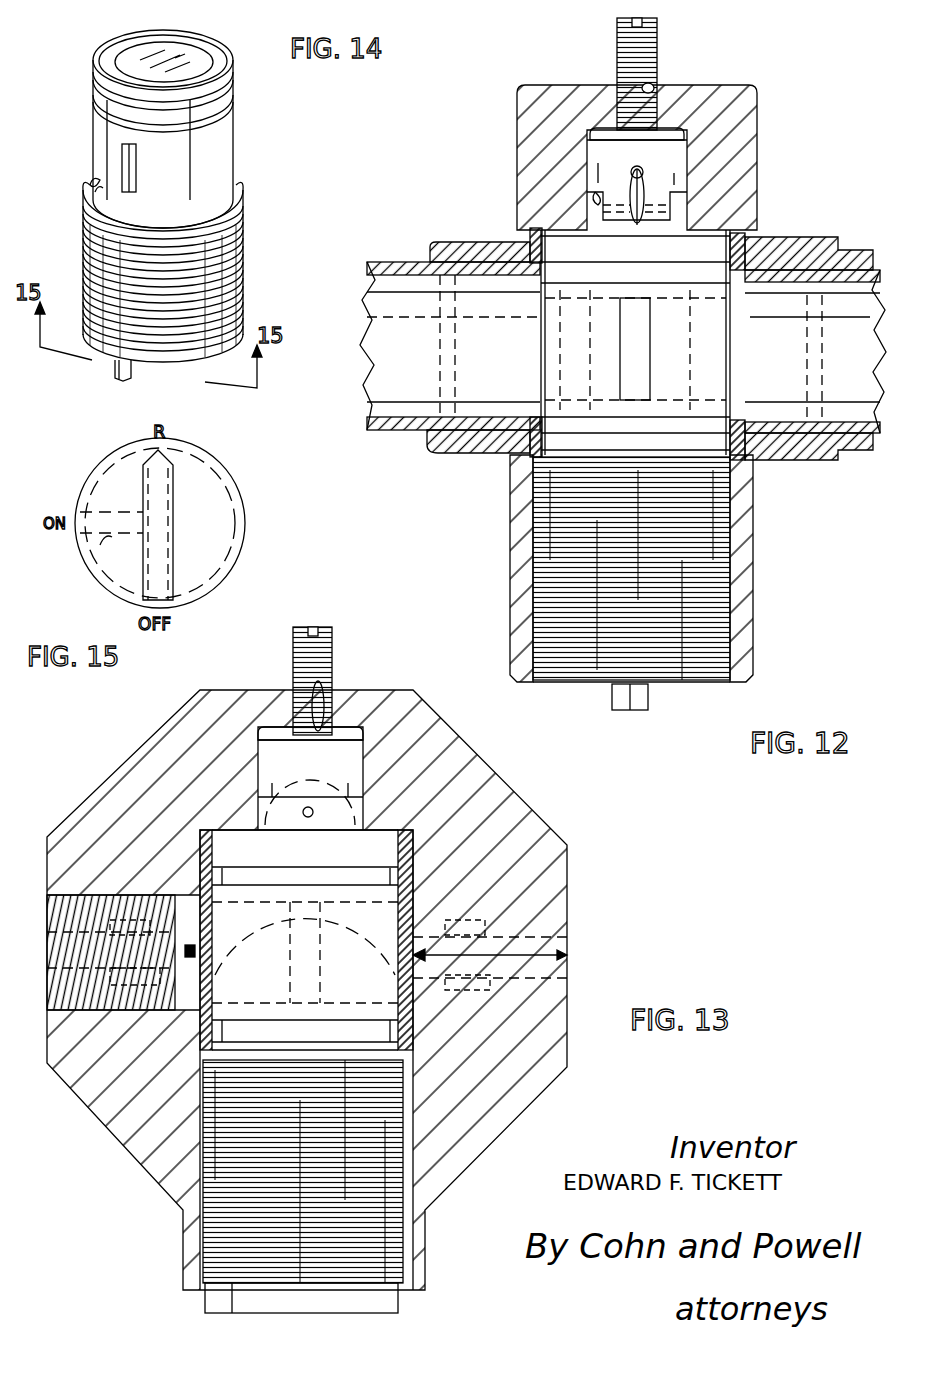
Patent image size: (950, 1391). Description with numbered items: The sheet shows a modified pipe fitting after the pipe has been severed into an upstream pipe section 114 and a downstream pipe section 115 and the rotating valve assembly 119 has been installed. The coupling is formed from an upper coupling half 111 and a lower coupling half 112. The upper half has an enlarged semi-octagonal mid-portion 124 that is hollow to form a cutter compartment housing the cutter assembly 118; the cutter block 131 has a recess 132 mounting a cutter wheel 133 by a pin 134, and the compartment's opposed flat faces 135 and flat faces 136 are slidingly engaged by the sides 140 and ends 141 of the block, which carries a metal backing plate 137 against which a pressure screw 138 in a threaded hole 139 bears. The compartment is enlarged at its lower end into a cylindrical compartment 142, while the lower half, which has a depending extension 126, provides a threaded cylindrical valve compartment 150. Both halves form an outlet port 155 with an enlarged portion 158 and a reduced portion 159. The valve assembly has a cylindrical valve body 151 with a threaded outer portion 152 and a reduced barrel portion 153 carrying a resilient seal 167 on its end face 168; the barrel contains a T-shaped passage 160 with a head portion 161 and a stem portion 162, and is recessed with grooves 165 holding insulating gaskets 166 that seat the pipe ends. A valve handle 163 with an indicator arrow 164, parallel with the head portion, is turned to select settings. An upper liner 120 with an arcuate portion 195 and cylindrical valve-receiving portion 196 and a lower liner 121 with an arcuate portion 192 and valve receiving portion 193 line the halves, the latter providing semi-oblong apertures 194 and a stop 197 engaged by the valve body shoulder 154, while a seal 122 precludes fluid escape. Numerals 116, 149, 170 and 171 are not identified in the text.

In FIG. 12, the upper coupling half 111 is at (437, 247).
In FIG. 12, the lower coupling half 112 is at (447, 455).
In FIG. 12, the upstream pipe section 114 is at (397, 433).
In FIG. 12, the downstream pipe section 115 is at (870, 440).
In FIG. 13, the outlet passage 116 is at (500, 937).
In FIG. 12, the cutter assembly 118 is at (688, 138).
In FIG. 13, the cutter assembly 118 is at (363, 771).
In FIG. 14, the rotating valve assembly 119 is at (243, 288).
In FIG. 12, the rotating valve assembly 119 is at (748, 563).
In FIG. 13, the rotating valve assembly 119 is at (205, 1207).
In FIG. 12, the upper liner 120 is at (790, 252).
In FIG. 13, the upper liner 120 is at (417, 900).
In FIG. 12, the lower liner 121 is at (797, 460).
In FIG. 13, the lower liner 121 is at (415, 1022).
In FIG. 13, the seal 122 is at (460, 933).
In FIG. 12, the semi-octagonal mid-portion 124 is at (517, 113).
In FIG. 13, the depending extension 126 is at (183, 1245).
In FIG. 13, the cutter block 131 is at (270, 763).
In FIG. 12, the recess 132 is at (690, 174).
In FIG. 12, the cutter wheel 133 is at (690, 202).
In FIG. 13, the cutter wheel 133 is at (263, 758).
In FIG. 12, the pin 134 is at (672, 216).
In FIG. 12, the flat faces 135 is at (590, 200).
In FIG. 13, the flat faces 136 is at (363, 807).
In FIG. 12, the metal backing plate 137 is at (597, 130).
In FIG. 13, the metal backing plate 137 is at (343, 727).
In FIG. 12, the pressure screw 138 is at (660, 26).
In FIG. 13, the pressure screw 138 is at (333, 636).
In FIG. 12, the threaded hole 139 is at (652, 86).
In FIG. 13, the threaded hole 139 is at (312, 697).
In FIG. 12, the sides 140 is at (545, 150).
In FIG. 13, the ends 141 is at (365, 737).
In FIG. 12, the cylindrical compartment 142 is at (533, 238).
In FIG. 12, the inlet bore 149 is at (547, 323).
In FIG. 12, the valve compartment 150 is at (540, 528).
In FIG. 14, the valve body 151 is at (82, 250).
In FIG. 15, the valve body 151 is at (102, 588).
In FIG. 14, the threaded outer portion 152 is at (245, 255).
In FIG. 15, the threaded outer portion 152 is at (245, 512).
In FIG. 12, the threaded outer portion 152 is at (533, 563).
In FIG. 14, the barrel portion 153 is at (233, 127).
In FIG. 15, the barrel portion 153 is at (217, 473).
In FIG. 12, the barrel portion 153 is at (535, 368).
In FIG. 13, the barrel portion 153 is at (305, 940).
In FIG. 14, the valve body shoulder 154 is at (233, 192).
In FIG. 12, the valve body shoulder 154 is at (533, 477).
In FIG. 13, the valve body shoulder 154 is at (200, 1133).
In FIG. 13, the outlet port 155 is at (83, 900).
In FIG. 13, the enlarged portion 158 is at (195, 1015).
In FIG. 13, the reduced portion 159 is at (200, 1010).
In FIG. 15, the T-shaped passage 160 is at (173, 533).
In FIG. 14, the head portion 161 is at (127, 163).
In FIG. 15, the head portion 161 is at (175, 555).
In FIG. 12, the head portion 161 is at (640, 352).
In FIG. 13, the head portion 161 is at (268, 903).
In FIG. 15, the stem portion 162 is at (100, 547).
In FIG. 13, the stem portion 162 is at (318, 947).
In FIG. 14, the valve handle 163 is at (143, 363).
In FIG. 15, the valve handle 163 is at (140, 497).
In FIG. 12, the valve handle 163 is at (630, 712).
In FIG. 13, the valve handle 163 is at (380, 1313).
In FIG. 14, the indicator arrow 164 is at (135, 368).
In FIG. 15, the indicator arrow 164 is at (150, 452).
In FIG. 12, the indicator arrow 164 is at (648, 700).
In FIG. 13, the indicator arrow 164 is at (203, 1300).
In FIG. 14, the grooves 165 is at (103, 123).
In FIG. 12, the grooves 165 is at (585, 237).
In FIG. 13, the grooves 165 is at (367, 1020).
In FIG. 14, the insulating gaskets 166 is at (100, 112).
In FIG. 12, the insulating gaskets 166 is at (700, 280).
In FIG. 13, the insulating gaskets 166 is at (417, 943).
In FIG. 14, the resilient seal 167 is at (187, 38).
In FIG. 12, the resilient seal 167 is at (745, 242).
In FIG. 13, the resilient seal 167 is at (415, 838).
In FIG. 14, the end face 168 is at (137, 63).
In FIG. 14, the ring 170 is at (93, 178).
In FIG. 12, the ring 170 is at (567, 413).
In FIG. 14, the lower groove 171 is at (100, 188).
In FIG. 12, the lower groove 171 is at (694, 423).
In FIG. 12, the arcuate portion 192 is at (807, 420).
In FIG. 12, the valve receiving portion 193 is at (740, 433).
In FIG. 13, the valve receiving portion 193 is at (200, 1073).
In FIG. 13, the semi-oblong apertures 194 is at (200, 1007).
In FIG. 12, the arcuate portion 195 is at (800, 278).
In FIG. 12, the cylindrical valve-receiving portion 196 is at (745, 285).
In FIG. 13, the cylindrical valve-receiving portion 196 is at (200, 860).
In FIG. 12, the stop 197 is at (748, 465).
In FIG. 13, the stop 197 is at (440, 1050).